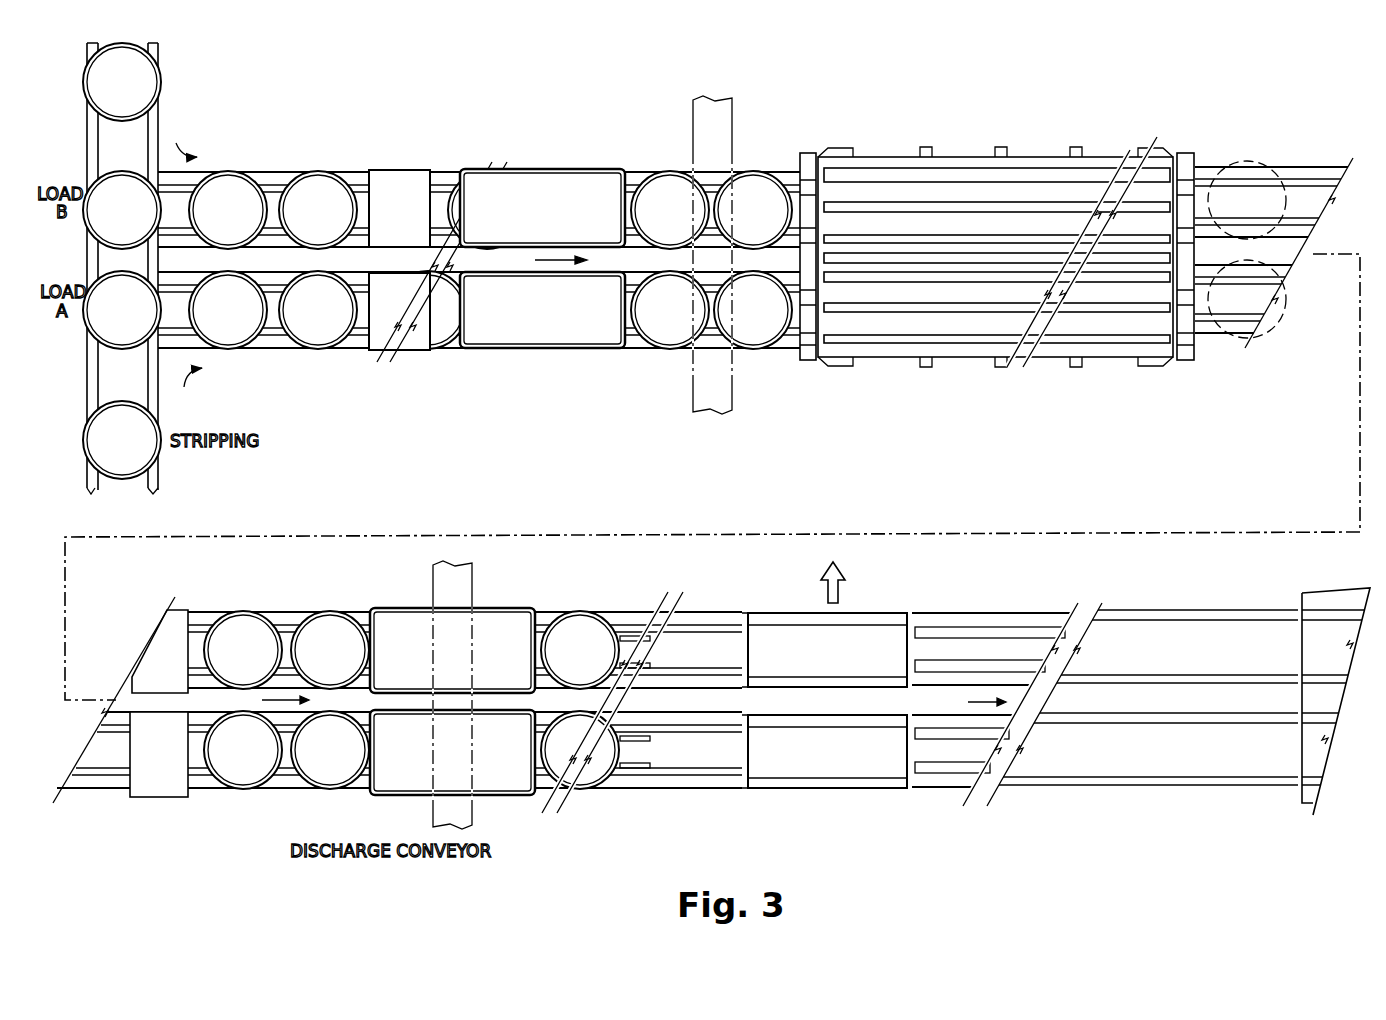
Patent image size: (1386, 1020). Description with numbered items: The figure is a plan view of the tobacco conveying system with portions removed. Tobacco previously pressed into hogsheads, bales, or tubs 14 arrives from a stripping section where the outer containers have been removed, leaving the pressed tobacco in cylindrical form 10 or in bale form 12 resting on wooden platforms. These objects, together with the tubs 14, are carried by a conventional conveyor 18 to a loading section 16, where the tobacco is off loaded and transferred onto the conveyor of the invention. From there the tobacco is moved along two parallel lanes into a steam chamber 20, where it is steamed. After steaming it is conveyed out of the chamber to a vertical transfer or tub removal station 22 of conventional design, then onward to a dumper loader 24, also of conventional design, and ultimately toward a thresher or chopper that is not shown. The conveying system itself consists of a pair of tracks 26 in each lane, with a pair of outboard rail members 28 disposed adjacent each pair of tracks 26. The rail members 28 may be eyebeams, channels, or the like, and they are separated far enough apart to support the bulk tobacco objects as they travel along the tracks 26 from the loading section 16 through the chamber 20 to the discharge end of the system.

The cylindrical form 10 is at (702, 487).
The bale form 12 is at (412, 162).
The tubs 14 is at (552, 166).
The loading section 16 is at (243, 128).
The conventional conveyor 18 is at (134, 382).
The steam chamber 20 is at (1092, 140).
The vertical transfer or tub removal station 22 is at (875, 607).
The dumper loader 24 is at (1207, 610).
The tracks 26 is at (177, 226).
The outboard rail members 28 is at (272, 172).